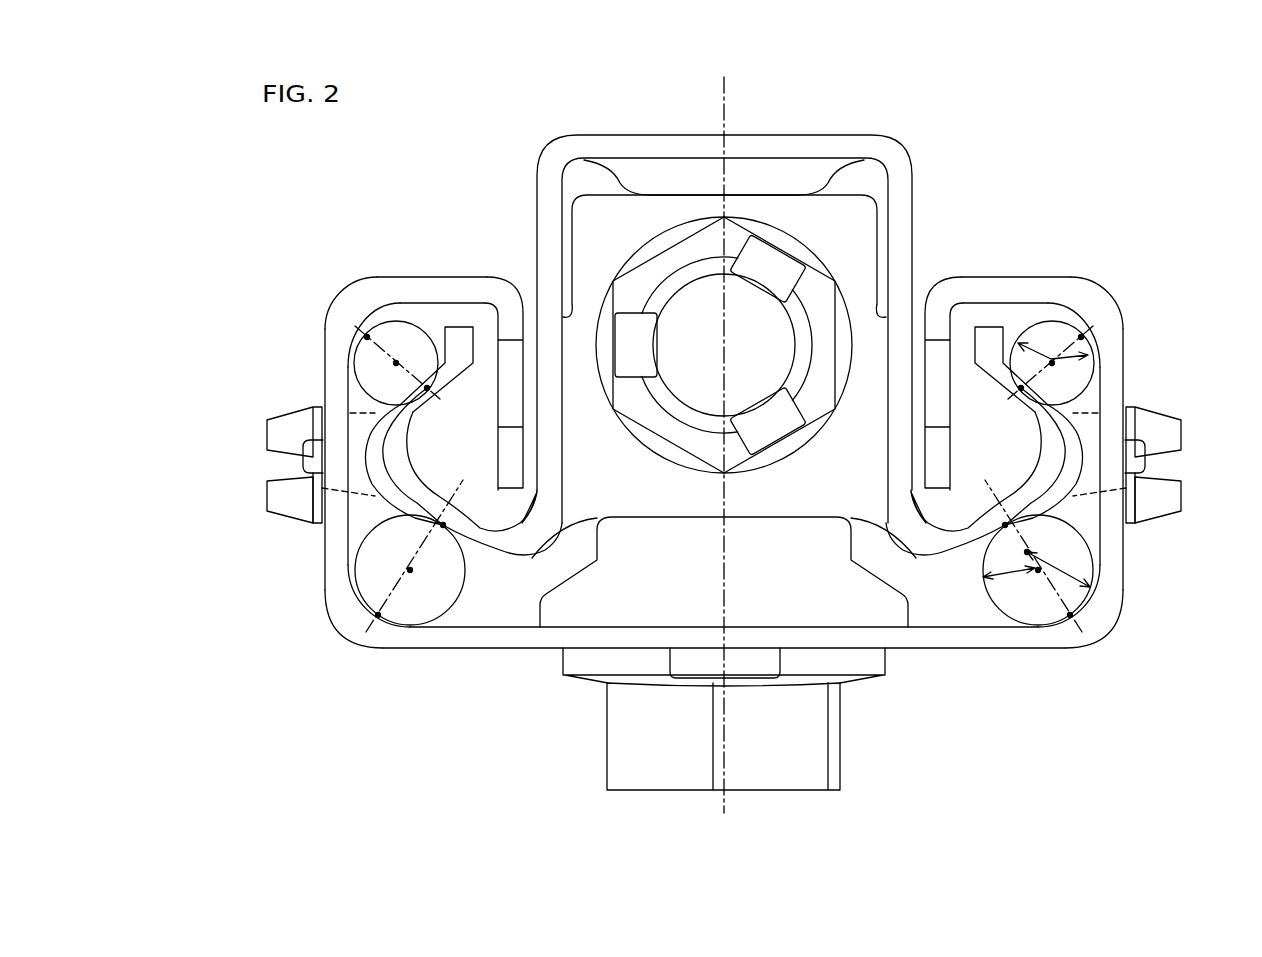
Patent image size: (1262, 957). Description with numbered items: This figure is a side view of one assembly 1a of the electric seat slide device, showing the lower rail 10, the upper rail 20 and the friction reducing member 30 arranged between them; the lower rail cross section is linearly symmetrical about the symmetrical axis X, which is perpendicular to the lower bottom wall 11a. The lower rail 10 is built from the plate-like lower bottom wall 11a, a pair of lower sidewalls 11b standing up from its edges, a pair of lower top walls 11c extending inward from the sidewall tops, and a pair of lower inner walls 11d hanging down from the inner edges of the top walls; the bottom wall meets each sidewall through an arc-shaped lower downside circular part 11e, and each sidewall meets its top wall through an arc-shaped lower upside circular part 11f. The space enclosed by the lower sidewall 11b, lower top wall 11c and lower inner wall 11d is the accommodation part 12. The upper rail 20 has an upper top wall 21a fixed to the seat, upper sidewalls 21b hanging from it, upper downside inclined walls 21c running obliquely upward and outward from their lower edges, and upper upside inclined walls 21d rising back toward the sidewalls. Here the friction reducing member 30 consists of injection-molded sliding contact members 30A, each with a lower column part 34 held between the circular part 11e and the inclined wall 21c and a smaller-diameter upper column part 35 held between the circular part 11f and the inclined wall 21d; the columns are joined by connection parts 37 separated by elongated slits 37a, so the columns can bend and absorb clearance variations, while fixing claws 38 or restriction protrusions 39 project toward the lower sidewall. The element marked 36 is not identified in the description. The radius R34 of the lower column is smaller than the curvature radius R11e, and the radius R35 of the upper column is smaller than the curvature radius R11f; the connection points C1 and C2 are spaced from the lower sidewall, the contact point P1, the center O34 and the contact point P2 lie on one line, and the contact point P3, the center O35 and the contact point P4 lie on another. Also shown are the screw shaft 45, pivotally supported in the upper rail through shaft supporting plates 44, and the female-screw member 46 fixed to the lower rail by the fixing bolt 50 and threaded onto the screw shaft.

The assembly 1a is at (1030, 99).
The lower rail 10 is at (1094, 286).
The lower bottom wall 11a is at (698, 633).
The lower sidewall 11b is at (330, 390).
The lower top wall 11c is at (425, 293).
The lower inner wall 11d is at (512, 472).
The lower downside circular part 11e is at (387, 622).
The lower upside circular part 11f is at (337, 313).
The accommodation part 12 is at (480, 436).
The upper rail 20 is at (871, 124).
The upper top wall 21a is at (762, 142).
The upper sidewall 21b is at (542, 208).
The upper downside inclined wall 21c is at (453, 507).
The upper upside inclined wall 21d is at (440, 397).
The friction reducing member 30 is at (369, 569).
The sliding contact member 30A is at (738, 449).
The lower column part 34 is at (410, 607).
The upper column part 35 is at (387, 326).
The connecting portion 36 is at (417, 393).
The connection part 37 is at (357, 437).
The slit 37a is at (290, 491).
The fixing claw 38 is at (287, 510).
The restriction protrusion 39 is at (310, 460).
The shaft supporting plate 44 is at (792, 510).
The screw shaft 45 is at (708, 302).
The female-screw member 46 is at (845, 607).
The fixing bolt 50 is at (615, 738).
The connection point C1 is at (367, 552).
The connection point C2 is at (372, 368).
The center of the lower column part O34 is at (411, 573).
The center of the upper column part O35 is at (392, 350).
The contact point P1 is at (378, 617).
The contact point P2 is at (444, 527).
The contact point P3 is at (367, 337).
The contact point P4 is at (427, 387).
The curvature radius of the lower downside circular part R11e is at (1090, 587).
The curvature radius of the lower upside circular part R11f is at (1100, 397).
The radius of the lower column part R34 is at (1007, 578).
The radius of the upper column part R35 is at (1023, 347).
The symmetrical axis X is at (722, 88).